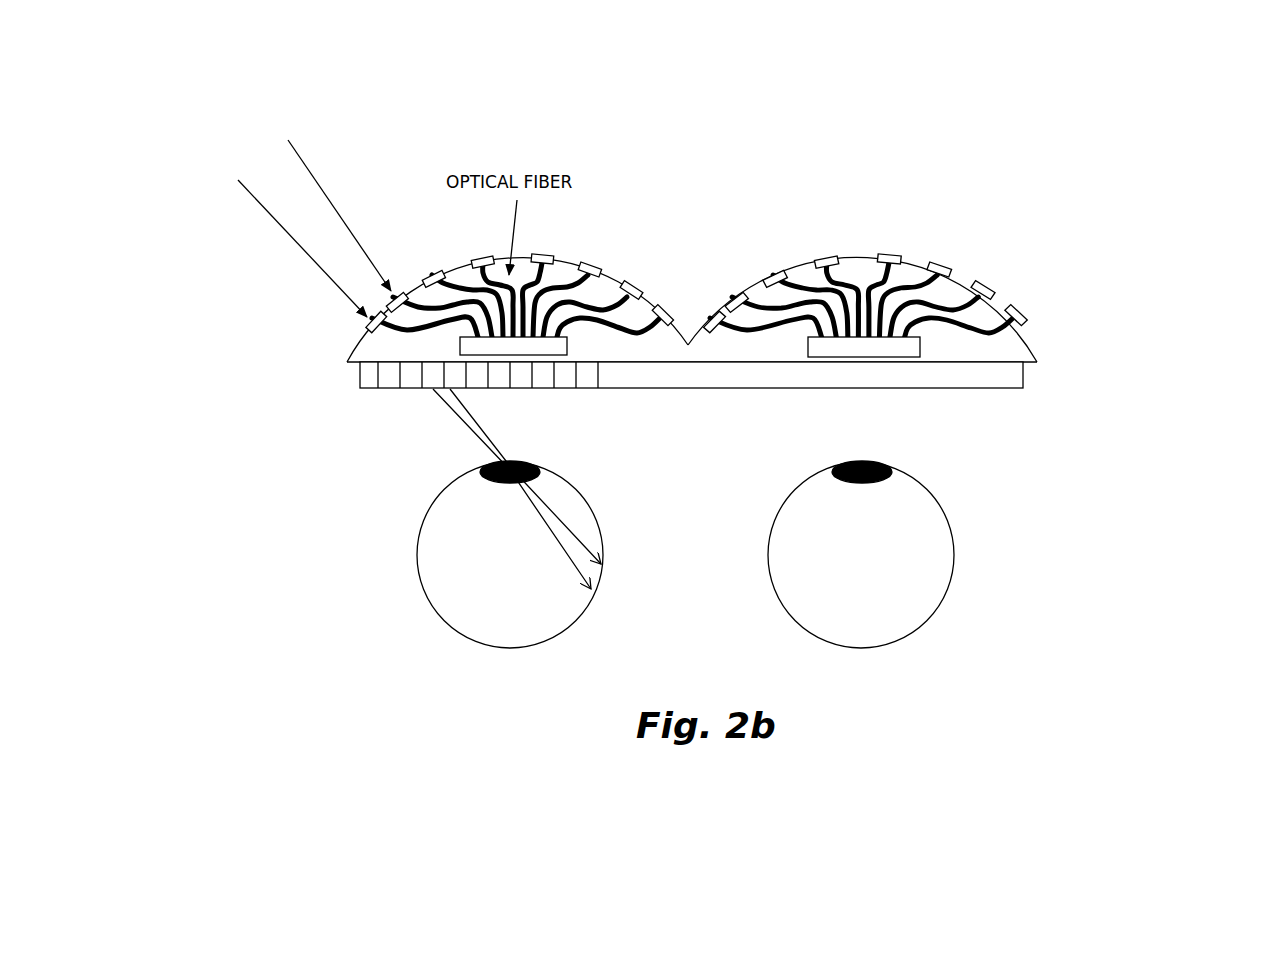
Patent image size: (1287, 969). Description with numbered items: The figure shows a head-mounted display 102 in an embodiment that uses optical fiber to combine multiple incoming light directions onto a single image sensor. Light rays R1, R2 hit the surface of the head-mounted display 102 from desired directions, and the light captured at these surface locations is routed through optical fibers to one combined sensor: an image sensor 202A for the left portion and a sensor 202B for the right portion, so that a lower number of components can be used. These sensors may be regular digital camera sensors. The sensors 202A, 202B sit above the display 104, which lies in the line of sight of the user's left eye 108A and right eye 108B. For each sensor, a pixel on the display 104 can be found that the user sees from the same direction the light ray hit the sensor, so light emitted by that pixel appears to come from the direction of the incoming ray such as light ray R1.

The head-mounted display 102 is at (1039, 350).
The display 104 is at (691, 375).
The image sensor for the left portion 202A is at (458, 346).
The sensor for the right portion 202B is at (927, 348).
The left eye 108A is at (397, 555).
The right eye 108B is at (976, 555).
The light ray R1 is at (259, 209).
The light ray R2 is at (305, 168).